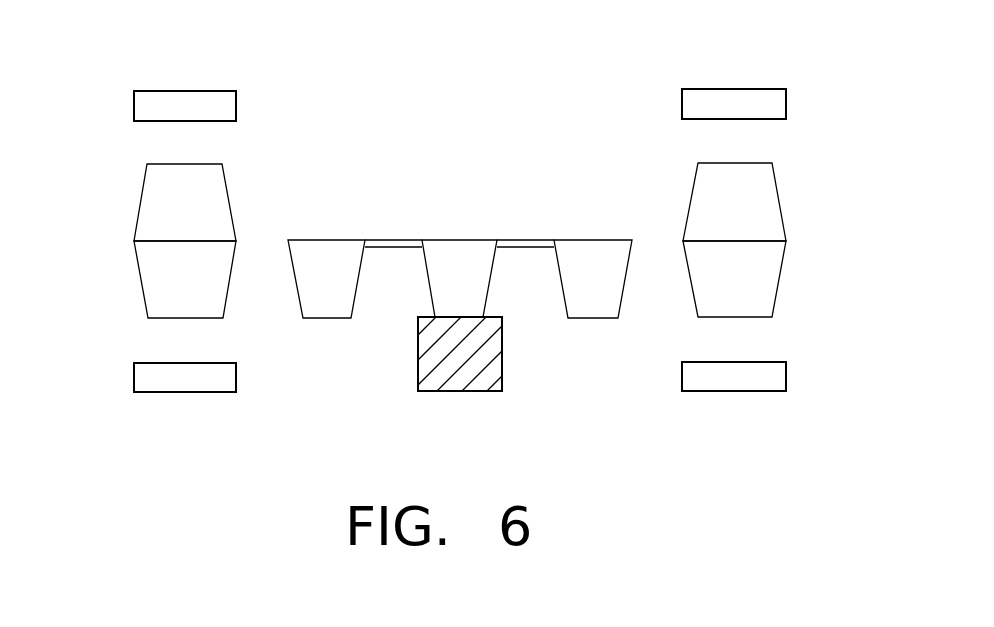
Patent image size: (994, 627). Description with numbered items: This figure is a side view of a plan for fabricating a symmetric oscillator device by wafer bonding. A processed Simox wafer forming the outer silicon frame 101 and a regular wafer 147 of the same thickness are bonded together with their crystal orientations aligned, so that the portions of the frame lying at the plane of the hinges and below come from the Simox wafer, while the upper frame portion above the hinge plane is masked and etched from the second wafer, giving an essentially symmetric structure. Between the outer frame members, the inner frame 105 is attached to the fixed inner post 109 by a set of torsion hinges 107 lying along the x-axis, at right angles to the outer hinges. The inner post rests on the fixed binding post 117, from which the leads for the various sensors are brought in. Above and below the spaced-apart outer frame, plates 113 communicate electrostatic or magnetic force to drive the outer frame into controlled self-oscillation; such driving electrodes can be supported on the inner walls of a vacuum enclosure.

The outer silicon frame 101 is at (137, 267).
The inner frame 105 is at (330, 318).
The torsion hinges 107 is at (388, 240).
The fixed inner post 109 is at (455, 252).
The plates 113 is at (147, 91).
The fixed binding post 117 is at (438, 391).
The regular wafer 147 is at (142, 193).